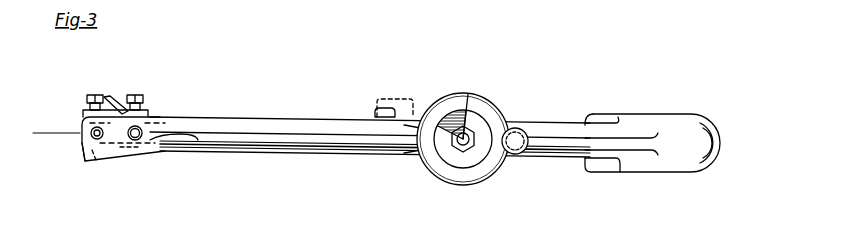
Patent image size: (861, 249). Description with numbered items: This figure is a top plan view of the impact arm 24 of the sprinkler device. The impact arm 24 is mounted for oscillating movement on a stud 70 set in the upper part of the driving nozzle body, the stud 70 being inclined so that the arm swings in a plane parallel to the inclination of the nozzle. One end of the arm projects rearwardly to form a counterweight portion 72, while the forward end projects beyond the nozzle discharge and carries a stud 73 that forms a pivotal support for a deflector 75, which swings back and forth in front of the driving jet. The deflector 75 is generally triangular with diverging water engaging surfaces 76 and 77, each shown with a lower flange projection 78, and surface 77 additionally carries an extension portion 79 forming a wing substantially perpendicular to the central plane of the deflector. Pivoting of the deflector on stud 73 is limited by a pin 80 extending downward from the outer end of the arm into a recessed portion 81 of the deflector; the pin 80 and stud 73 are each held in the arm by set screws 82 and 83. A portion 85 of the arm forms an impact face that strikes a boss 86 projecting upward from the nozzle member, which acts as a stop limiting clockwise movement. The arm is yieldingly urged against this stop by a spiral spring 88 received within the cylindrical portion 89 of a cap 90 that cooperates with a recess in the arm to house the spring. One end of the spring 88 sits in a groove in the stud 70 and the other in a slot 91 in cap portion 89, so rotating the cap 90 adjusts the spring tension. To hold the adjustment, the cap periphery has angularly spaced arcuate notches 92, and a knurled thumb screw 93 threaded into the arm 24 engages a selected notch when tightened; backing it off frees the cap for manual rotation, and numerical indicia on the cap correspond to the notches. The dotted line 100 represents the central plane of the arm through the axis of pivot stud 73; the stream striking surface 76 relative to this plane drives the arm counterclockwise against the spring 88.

The impact arm 24 is at (307, 150).
The stud 70 is at (465, 145).
The counterweight portion 72 is at (668, 158).
The stud 73 is at (150, 140).
The deflector 75 is at (85, 158).
The water engaging surface 76 is at (150, 122).
The water engaging surface 77 is at (130, 150).
The lower flange projection 78 is at (110, 100).
The extension portion 79 is at (98, 160).
The pin 80 is at (95, 136).
The recessed portion 81 is at (88, 118).
The set screw 82 is at (92, 96).
The set screw 83 is at (140, 96).
The impact face portion 85 is at (372, 116).
The boss 86 is at (390, 99).
The spiral spring 88 is at (465, 113).
The cylindrical portion 89 is at (443, 118).
The cap 90 is at (497, 107).
The slot 91 is at (455, 108).
The arcuate notches 92 is at (468, 193).
The knurled thumb screw 93 is at (520, 152).
The dotted line 100 is at (82, 138).